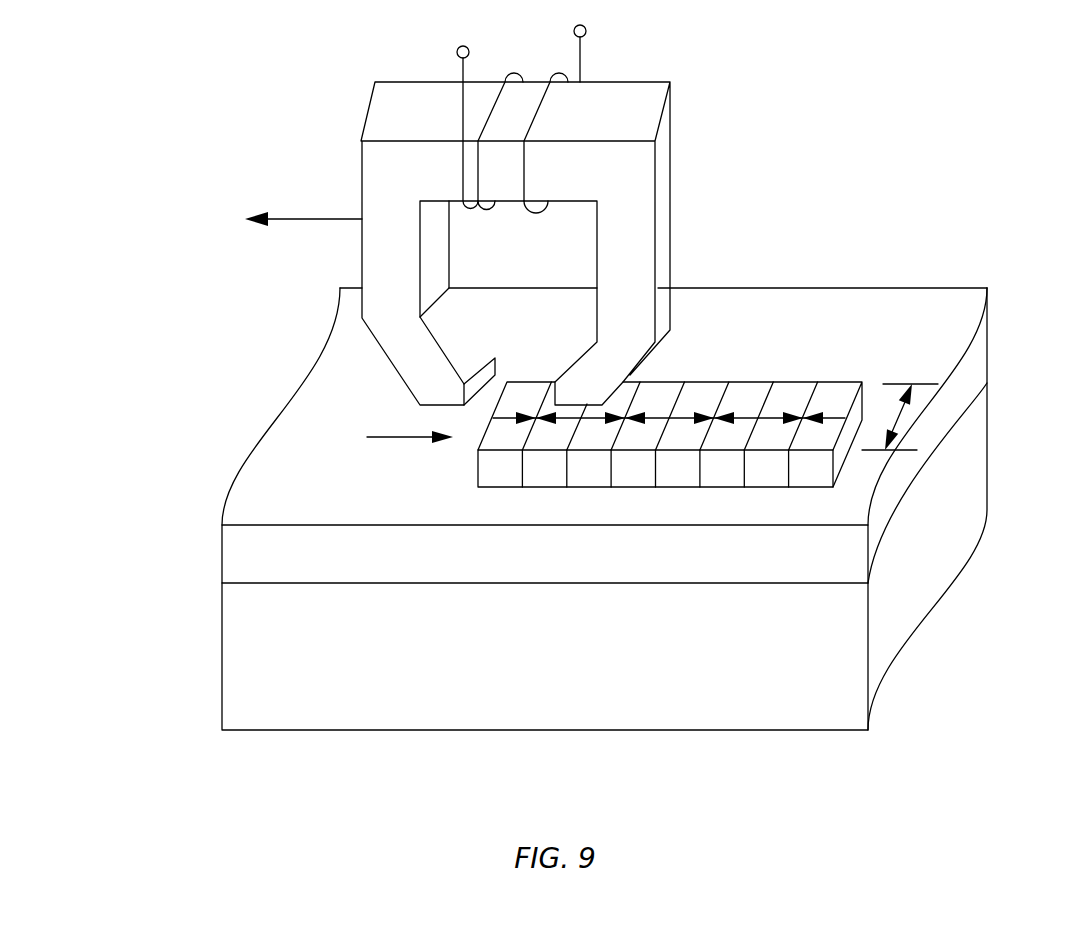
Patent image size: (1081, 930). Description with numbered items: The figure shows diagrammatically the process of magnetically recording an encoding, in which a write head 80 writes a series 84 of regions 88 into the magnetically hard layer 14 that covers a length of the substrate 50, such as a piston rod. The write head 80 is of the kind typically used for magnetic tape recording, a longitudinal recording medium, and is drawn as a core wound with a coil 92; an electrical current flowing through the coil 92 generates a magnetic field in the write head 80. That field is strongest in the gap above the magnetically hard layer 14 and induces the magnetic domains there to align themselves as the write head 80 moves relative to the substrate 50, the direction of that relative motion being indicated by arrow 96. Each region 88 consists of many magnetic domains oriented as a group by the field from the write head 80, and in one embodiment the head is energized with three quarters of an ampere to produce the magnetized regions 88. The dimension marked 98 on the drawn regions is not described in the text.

The magnetic recording layer 14 is at (237, 562).
The substrate 50 is at (243, 628).
The write head core 80 is at (647, 230).
The direction of medium motion 84 is at (391, 436).
The magnetic domains 88 is at (743, 393).
The coil 92 is at (580, 63).
The direction of head motion 96 is at (300, 216).
The track width 98 is at (903, 422).